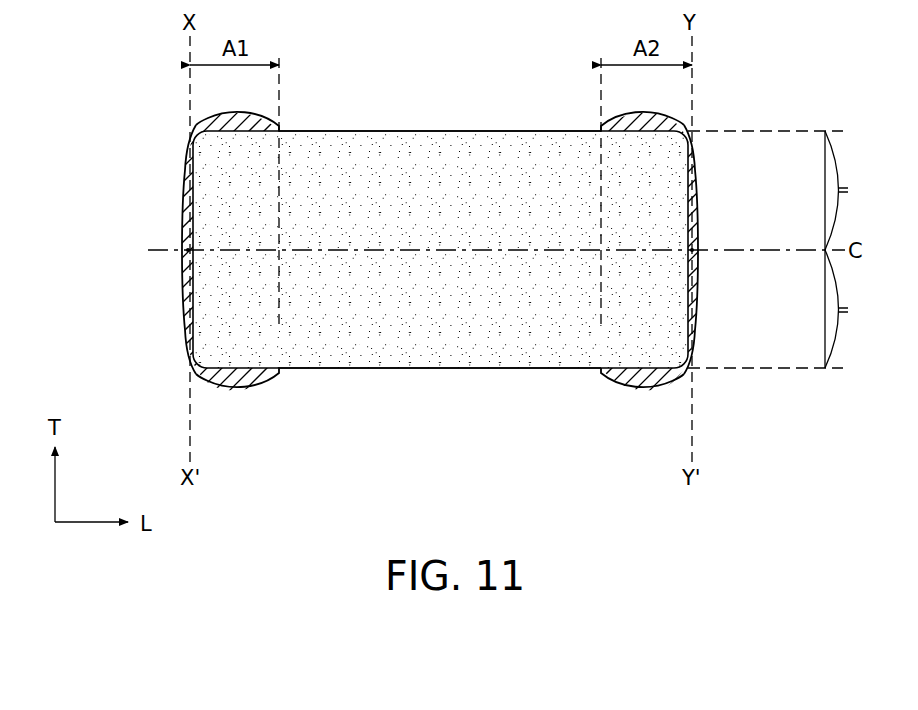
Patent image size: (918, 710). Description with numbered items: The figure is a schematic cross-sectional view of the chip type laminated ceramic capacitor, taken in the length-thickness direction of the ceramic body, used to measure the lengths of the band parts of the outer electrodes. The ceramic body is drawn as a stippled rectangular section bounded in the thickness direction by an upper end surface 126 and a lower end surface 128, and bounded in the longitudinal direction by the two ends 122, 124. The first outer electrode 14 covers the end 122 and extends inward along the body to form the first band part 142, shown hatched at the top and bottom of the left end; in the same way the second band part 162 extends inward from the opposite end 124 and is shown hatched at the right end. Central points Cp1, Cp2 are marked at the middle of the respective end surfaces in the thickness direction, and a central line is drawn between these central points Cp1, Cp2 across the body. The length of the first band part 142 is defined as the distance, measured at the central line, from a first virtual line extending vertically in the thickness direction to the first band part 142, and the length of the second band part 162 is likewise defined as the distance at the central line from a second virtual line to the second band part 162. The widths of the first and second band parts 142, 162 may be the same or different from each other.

The first outer electrode 14 is at (172, 191).
The first band part 142 is at (238, 113).
The end of the ceramic body 122 is at (193, 330).
The second band part 162 is at (645, 112).
The end of the ceramic body 124 is at (689, 330).
The upper end surface 126 is at (455, 130).
The lower end surface 128 is at (470, 368).
The central point Cp1 is at (188, 250).
The central point Cp2 is at (692, 250).